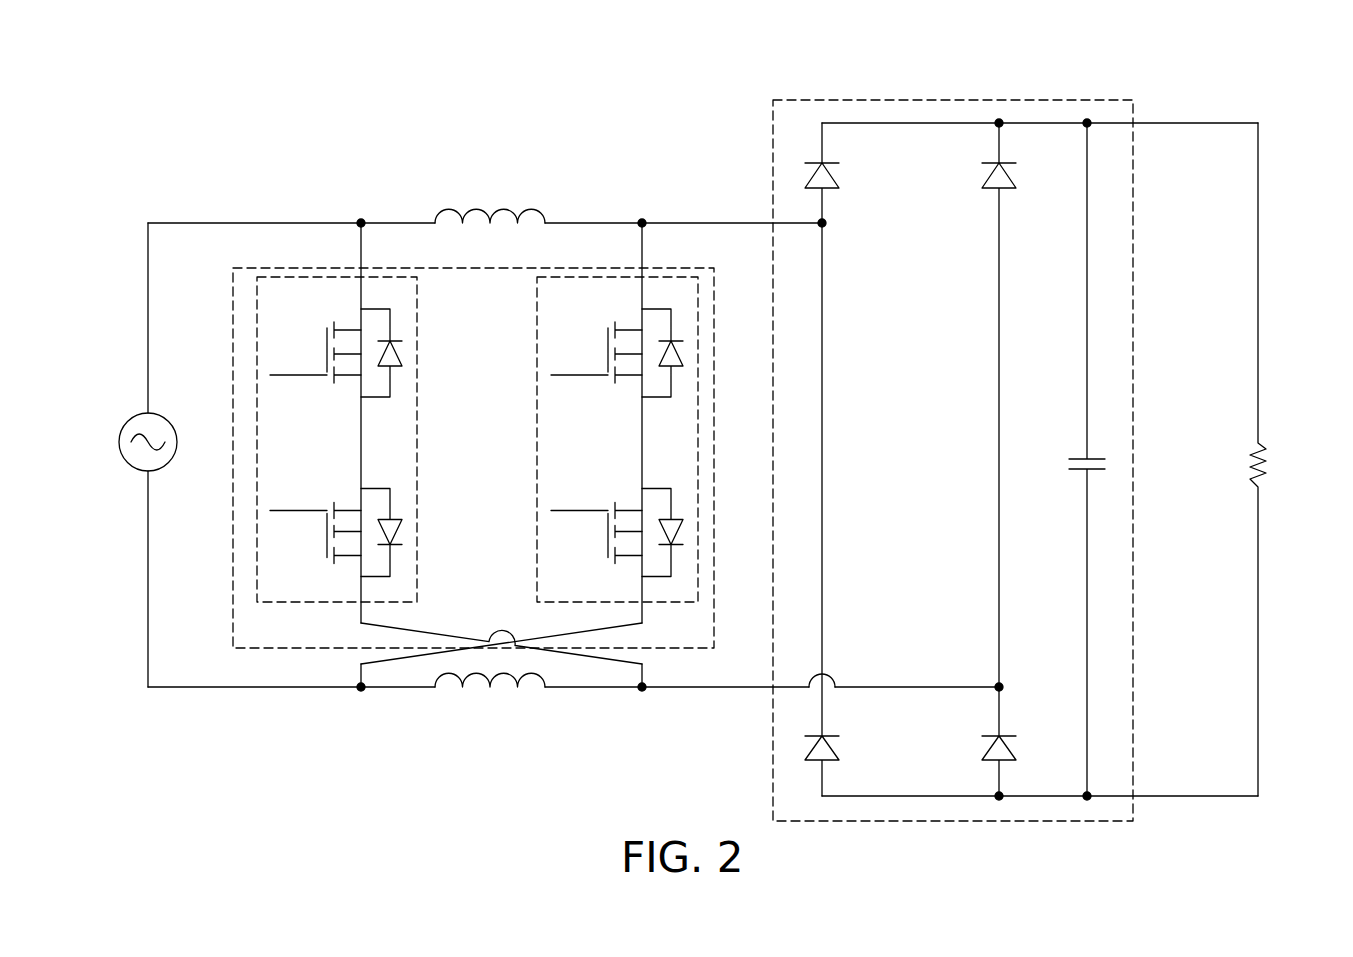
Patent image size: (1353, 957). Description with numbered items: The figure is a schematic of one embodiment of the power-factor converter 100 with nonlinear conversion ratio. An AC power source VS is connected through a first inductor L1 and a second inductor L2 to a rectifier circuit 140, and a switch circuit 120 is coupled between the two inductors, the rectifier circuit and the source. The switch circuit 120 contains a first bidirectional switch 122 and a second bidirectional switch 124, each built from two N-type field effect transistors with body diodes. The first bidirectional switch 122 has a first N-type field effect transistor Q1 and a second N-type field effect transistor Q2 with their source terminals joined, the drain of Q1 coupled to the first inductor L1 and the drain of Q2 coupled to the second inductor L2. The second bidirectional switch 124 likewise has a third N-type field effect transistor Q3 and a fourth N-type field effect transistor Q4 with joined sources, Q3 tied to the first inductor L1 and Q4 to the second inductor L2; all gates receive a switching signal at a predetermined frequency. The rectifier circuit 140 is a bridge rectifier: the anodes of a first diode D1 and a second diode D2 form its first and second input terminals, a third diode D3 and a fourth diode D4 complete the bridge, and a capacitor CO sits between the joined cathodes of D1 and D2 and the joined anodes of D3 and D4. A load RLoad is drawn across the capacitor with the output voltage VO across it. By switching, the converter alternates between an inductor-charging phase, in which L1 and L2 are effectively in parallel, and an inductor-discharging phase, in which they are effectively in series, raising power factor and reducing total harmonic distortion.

The power-factor converter with nonlinear conversion ratio 100 is at (1285, 117).
The switch circuit 120 is at (668, 268).
The first bidirectional switch 122 is at (418, 297).
The second bidirectional switch 124 is at (537, 360).
The rectifier circuit 140 is at (801, 99).
The first N-type field effect transistor Q1 is at (344, 318).
The second N-type field effect transistor Q2 is at (344, 492).
The third N-type field effect transistor Q3 is at (625, 318).
The fourth N-type field effect transistor Q4 is at (625, 492).
The first inductor L1 is at (500, 204).
The second inductor L2 is at (500, 692).
The first diode D1 is at (830, 163).
The second diode D2 is at (1007, 163).
The third diode D3 is at (830, 736).
The fourth diode D4 is at (1007, 736).
The capacitor CO is at (1080, 462).
The load resistor RLoad is at (1245, 462).
The AC power source VS is at (126, 455).
The output voltage VO is at (1298, 466).